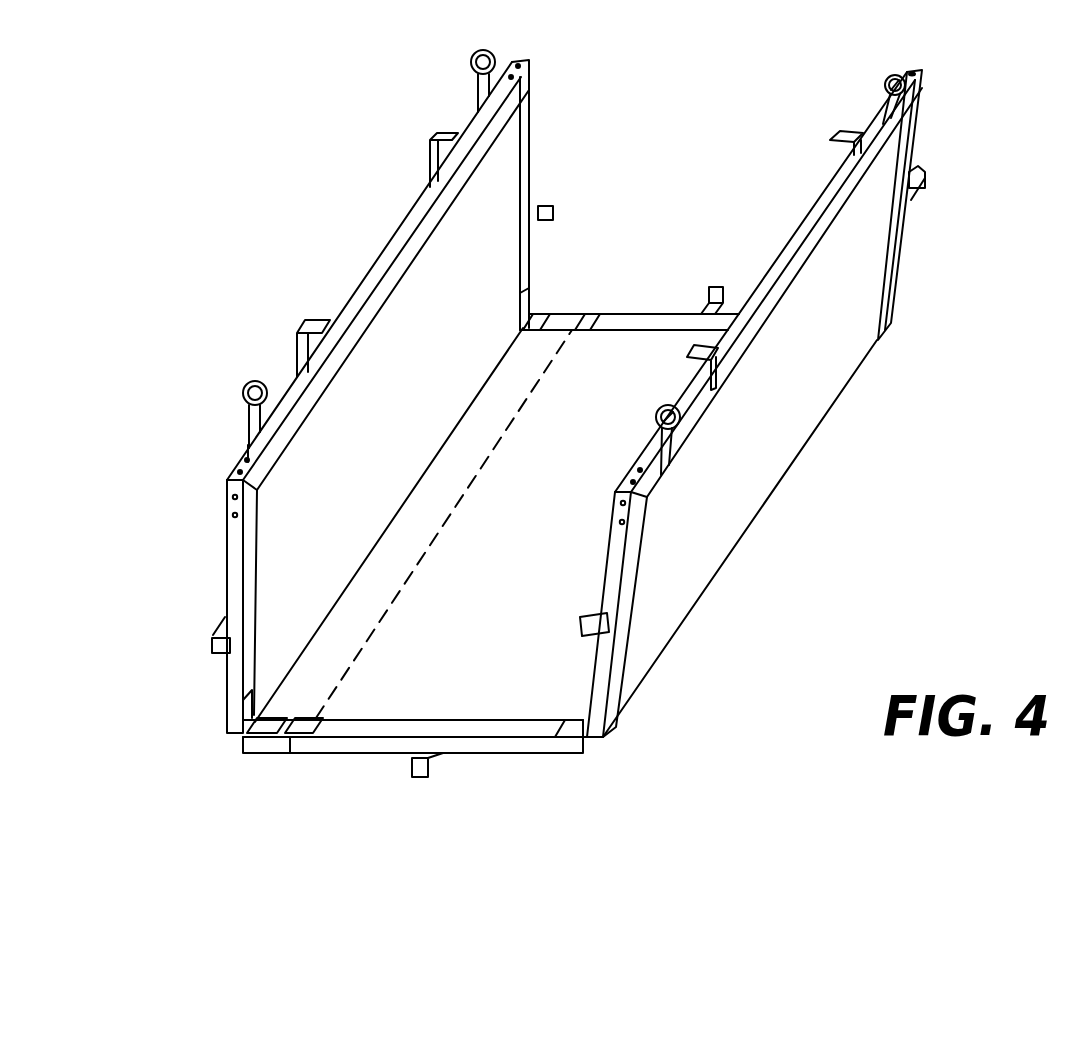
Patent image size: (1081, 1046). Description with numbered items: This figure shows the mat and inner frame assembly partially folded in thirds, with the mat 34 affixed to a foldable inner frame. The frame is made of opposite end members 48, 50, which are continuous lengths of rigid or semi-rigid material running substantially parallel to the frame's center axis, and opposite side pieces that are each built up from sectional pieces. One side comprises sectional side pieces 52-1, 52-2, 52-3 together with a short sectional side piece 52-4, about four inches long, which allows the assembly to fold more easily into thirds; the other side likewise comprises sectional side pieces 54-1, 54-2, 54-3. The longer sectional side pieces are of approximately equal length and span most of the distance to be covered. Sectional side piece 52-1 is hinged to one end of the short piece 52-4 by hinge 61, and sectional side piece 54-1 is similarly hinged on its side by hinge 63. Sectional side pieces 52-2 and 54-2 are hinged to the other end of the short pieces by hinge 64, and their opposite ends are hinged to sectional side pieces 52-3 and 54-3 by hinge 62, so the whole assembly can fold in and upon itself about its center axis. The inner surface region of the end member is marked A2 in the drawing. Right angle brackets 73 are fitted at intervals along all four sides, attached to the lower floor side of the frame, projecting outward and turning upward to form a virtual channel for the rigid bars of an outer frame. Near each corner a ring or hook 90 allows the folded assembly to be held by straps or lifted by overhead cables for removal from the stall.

The mat 34 is at (559, 502).
The end member 48 is at (397, 240).
The side wall inner surface area A2 is at (427, 402).
The end member 50 is at (807, 214).
The sectional side piece 52-1 is at (252, 532).
The sectional side piece 52-2 is at (427, 722).
The sectional side piece 52-3 is at (611, 535).
The sectional side piece 52-4 is at (262, 745).
The sectional side piece 54-1 is at (533, 103).
The sectional side piece 54-2 is at (647, 314).
The sectional side piece 54-3 is at (913, 128).
The hinge 61 is at (272, 718).
The hinge 62 is at (312, 722).
The hinge 63 is at (543, 312).
The hinge 64 is at (598, 314).
The right angle bracket 73 is at (437, 135).
The ring or hook 90 is at (472, 58).